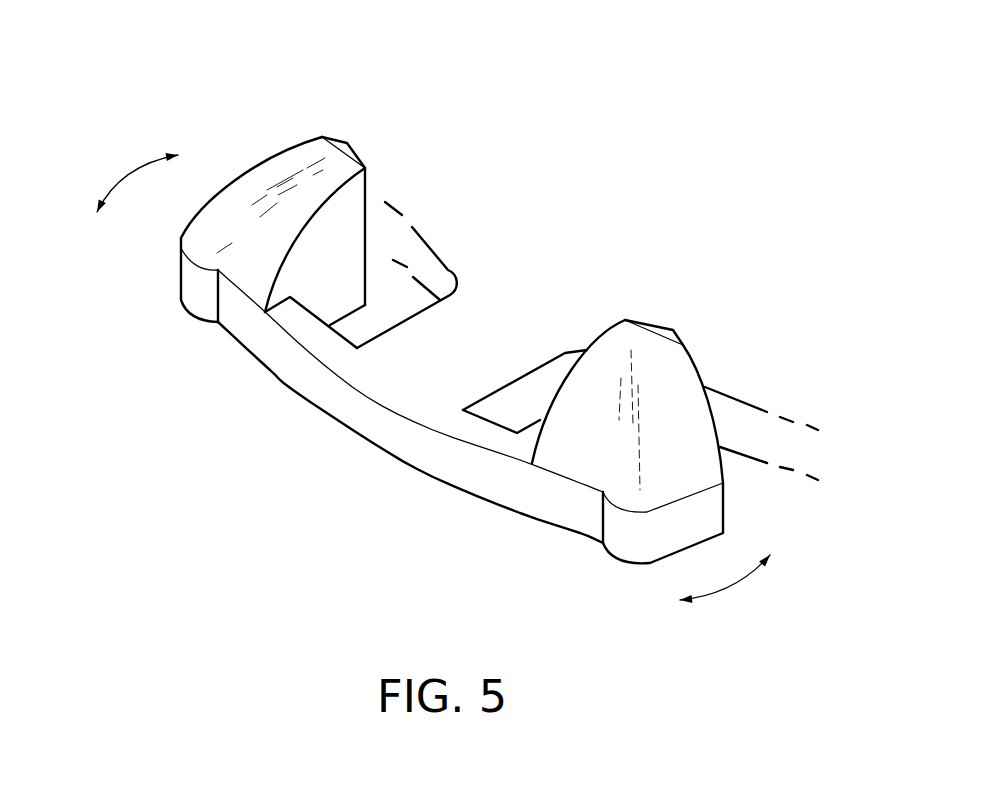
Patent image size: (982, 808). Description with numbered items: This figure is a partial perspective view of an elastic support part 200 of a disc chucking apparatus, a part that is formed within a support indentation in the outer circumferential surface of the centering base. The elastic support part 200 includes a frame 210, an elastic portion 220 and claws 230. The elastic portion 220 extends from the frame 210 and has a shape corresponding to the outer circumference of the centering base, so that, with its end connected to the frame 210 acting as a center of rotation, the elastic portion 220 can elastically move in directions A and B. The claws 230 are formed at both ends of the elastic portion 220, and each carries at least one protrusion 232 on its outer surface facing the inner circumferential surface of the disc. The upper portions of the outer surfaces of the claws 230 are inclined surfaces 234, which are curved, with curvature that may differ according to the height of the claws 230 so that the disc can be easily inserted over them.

The elastic support part 200 is at (190, 122).
The frame 210 is at (433, 362).
The elastic portion 220 is at (470, 467).
The claw 230 is at (353, 227).
The protrusion 232 is at (203, 295).
The inclined surface 234 is at (272, 177).